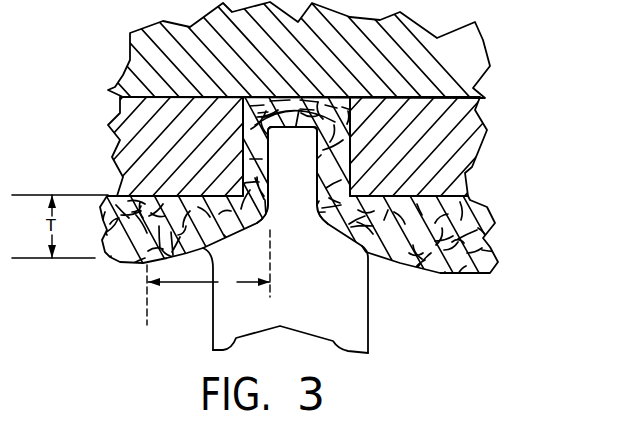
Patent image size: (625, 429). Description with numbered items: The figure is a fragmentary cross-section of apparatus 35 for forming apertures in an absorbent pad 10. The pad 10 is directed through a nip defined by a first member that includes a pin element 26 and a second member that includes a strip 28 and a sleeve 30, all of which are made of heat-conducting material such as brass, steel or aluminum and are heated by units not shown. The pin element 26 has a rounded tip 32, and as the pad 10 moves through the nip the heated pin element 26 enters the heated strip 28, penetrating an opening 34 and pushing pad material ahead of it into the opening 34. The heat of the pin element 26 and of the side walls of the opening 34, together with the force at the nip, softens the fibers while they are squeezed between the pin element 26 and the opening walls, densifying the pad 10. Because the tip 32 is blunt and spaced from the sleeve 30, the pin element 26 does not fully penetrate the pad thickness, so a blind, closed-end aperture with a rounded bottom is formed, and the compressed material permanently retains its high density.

The absorbent pad 10 is at (490, 205).
The pin element 26 is at (368, 293).
The strip 28 is at (478, 122).
The sleeve 30 is at (487, 38).
The rounded tip 32 is at (297, 117).
The opening 34 is at (350, 148).
The apparatus 35 is at (103, 345).